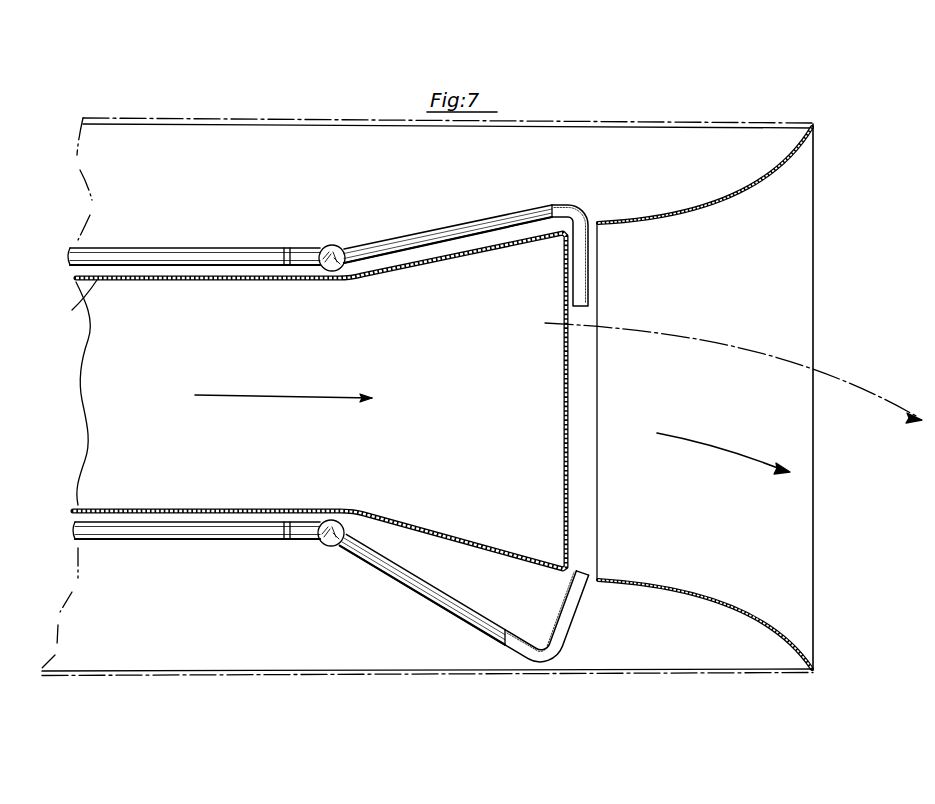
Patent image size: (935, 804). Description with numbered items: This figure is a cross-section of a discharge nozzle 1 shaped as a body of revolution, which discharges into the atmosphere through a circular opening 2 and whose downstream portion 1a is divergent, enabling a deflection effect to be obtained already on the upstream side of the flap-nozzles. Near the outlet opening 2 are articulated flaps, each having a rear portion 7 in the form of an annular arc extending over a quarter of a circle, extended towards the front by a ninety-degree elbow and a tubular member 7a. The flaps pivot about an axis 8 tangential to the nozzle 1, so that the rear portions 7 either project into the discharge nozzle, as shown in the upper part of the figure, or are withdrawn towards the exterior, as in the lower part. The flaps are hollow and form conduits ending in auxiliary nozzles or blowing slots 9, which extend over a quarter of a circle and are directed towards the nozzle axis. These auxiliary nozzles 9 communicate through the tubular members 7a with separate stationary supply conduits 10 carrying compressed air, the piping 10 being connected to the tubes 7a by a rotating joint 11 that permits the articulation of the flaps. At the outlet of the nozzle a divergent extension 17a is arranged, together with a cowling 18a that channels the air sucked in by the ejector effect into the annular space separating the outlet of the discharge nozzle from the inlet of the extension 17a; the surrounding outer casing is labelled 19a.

The nozzle 1 is at (102, 283).
The divergent downstream portion 1a is at (477, 255).
The circular opening 2 is at (566, 489).
The rear portion 7 is at (587, 296).
The tubular member 7a is at (558, 212).
The axis 8 is at (328, 255).
The auxiliary nozzle 9 is at (575, 307).
The supply conduit 10 is at (108, 255).
The rotating joint 11 is at (338, 252).
The divergent extension 17a is at (667, 207).
The cowling 18a is at (585, 417).
The casing 19a is at (622, 123).